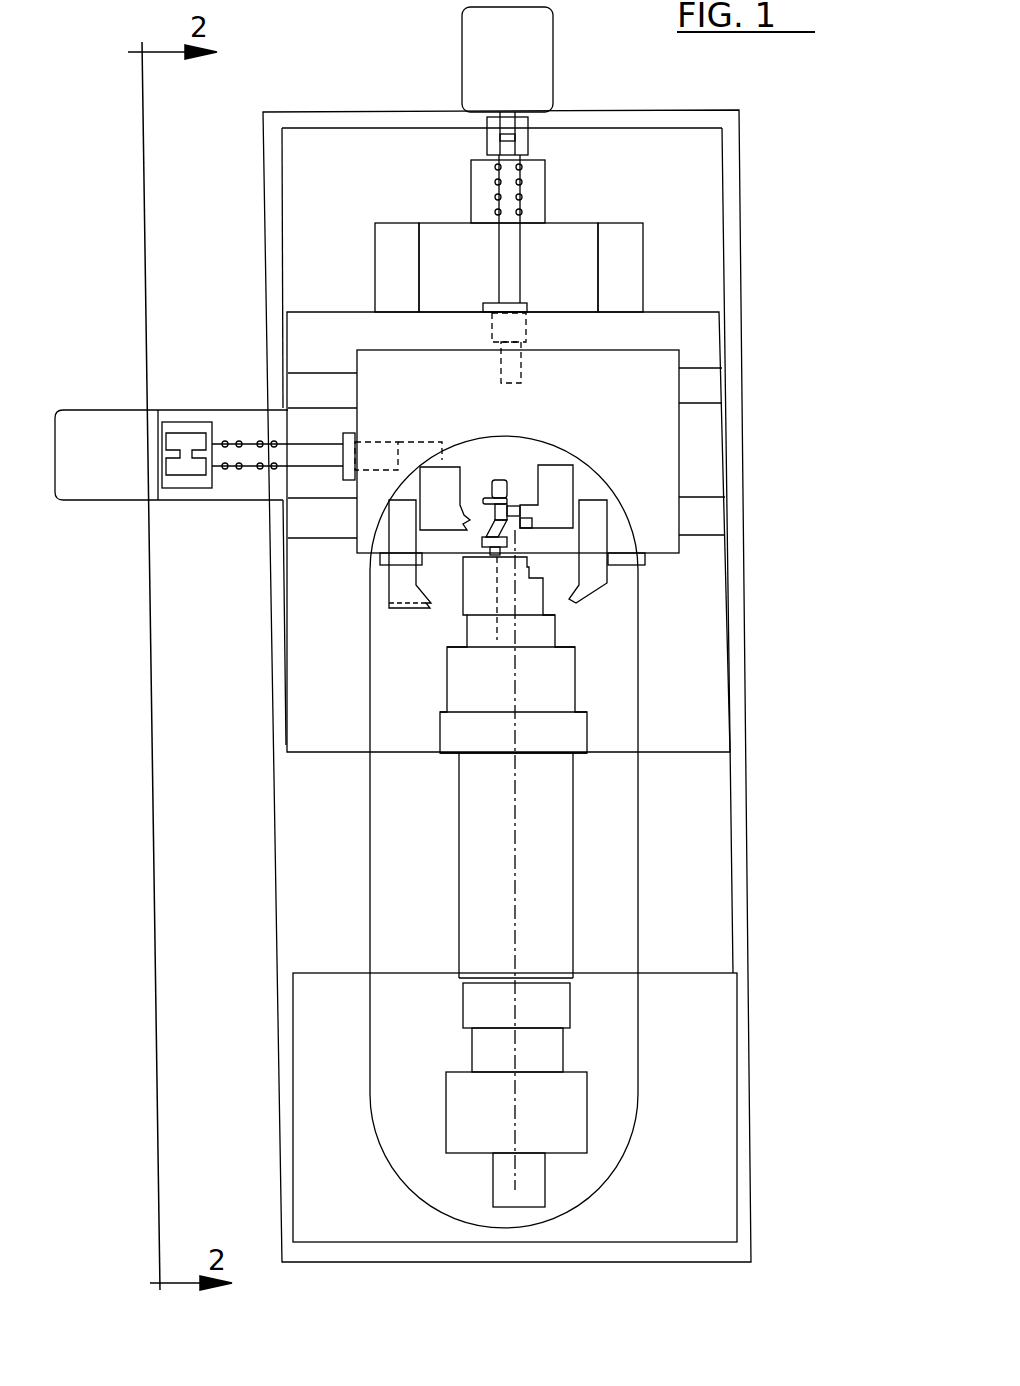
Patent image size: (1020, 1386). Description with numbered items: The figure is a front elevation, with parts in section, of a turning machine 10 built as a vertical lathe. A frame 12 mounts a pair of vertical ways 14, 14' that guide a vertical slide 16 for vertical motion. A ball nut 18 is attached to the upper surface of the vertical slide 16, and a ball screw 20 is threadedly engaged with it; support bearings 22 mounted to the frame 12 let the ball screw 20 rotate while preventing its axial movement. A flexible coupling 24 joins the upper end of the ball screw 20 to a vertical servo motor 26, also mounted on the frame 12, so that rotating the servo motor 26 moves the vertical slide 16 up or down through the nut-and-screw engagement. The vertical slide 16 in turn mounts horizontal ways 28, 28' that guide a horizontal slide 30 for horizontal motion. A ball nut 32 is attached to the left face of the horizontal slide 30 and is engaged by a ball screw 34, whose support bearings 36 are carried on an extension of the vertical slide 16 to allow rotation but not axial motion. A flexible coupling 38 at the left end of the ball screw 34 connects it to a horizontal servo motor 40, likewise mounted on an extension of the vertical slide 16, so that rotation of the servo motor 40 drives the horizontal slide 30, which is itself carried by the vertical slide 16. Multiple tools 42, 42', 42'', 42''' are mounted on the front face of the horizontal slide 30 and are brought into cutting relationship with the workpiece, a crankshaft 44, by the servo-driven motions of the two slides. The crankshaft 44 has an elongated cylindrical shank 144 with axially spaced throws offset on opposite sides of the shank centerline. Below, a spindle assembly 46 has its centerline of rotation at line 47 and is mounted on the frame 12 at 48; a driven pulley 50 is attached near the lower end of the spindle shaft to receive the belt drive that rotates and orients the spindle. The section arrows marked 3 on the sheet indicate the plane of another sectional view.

The section line indicator 3 is at (645, 905).
The turning machine 10 is at (760, 707).
The frame 12 is at (740, 303).
The vertical way 14 is at (562, 244).
The vertical way 14' is at (356, 245).
The vertical slide 16 is at (667, 323).
The ball nut 18 is at (527, 303).
The ball screw 20 is at (518, 255).
The support bearings 22 is at (533, 183).
The flexible coupling 24 is at (530, 137).
The vertical servo motor 26 is at (527, 60).
The horizontal way 28 is at (757, 382).
The horizontal way 28' is at (764, 535).
The horizontal slide 30 is at (655, 368).
The ball nut 32 is at (350, 438).
The ball screw 34 is at (313, 443).
The support bearings 36 is at (238, 440).
The flexible coupling 38 is at (190, 443).
The horizontal servo motor 40 is at (91, 424).
The tool 42 is at (363, 567).
The tool 42' is at (505, 463).
The tool 42'' is at (592, 494).
The tool 42''' is at (701, 551).
The crankshaft 44 is at (507, 483).
The spindle assembly 46 is at (612, 660).
The centerline of rotation 47 is at (516, 826).
The spindle assembly mounting 48 is at (578, 753).
The driven pulley 50 is at (563, 1010).
The shank 144 is at (497, 582).